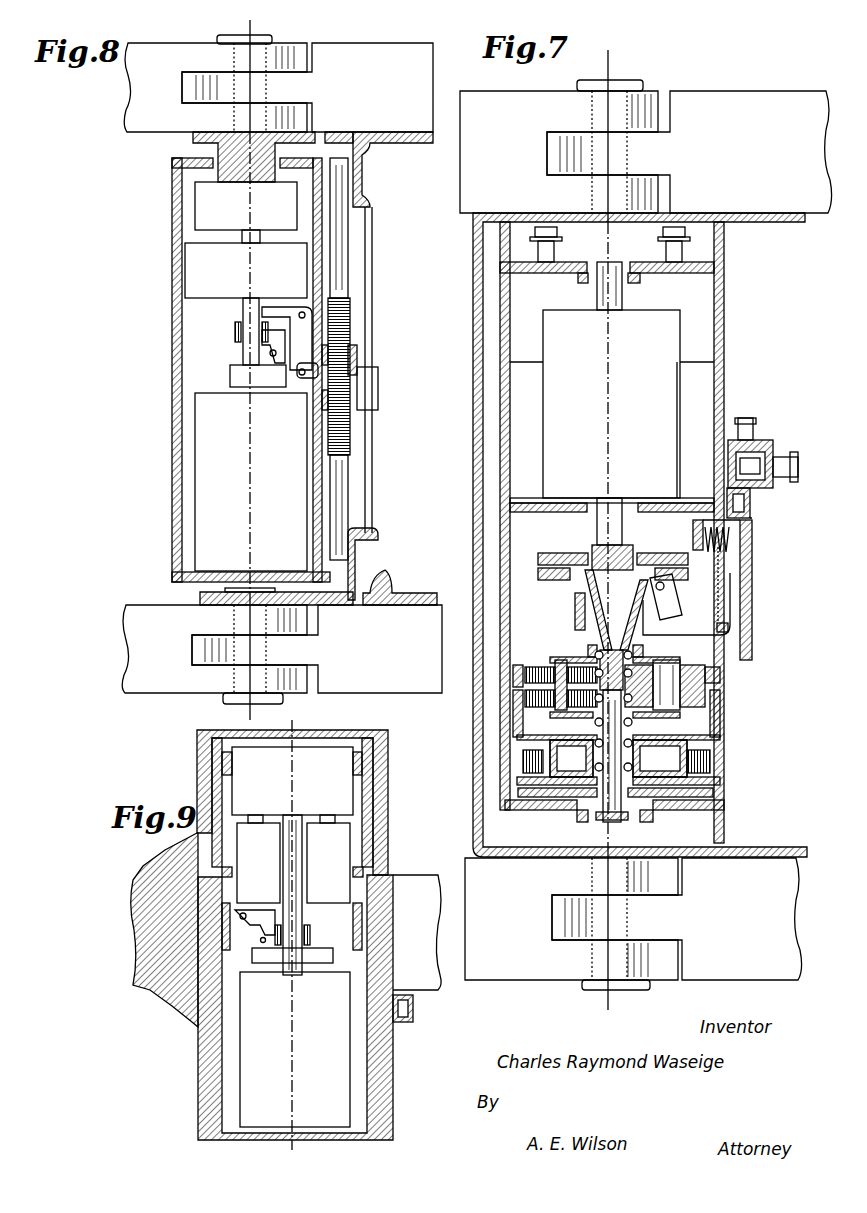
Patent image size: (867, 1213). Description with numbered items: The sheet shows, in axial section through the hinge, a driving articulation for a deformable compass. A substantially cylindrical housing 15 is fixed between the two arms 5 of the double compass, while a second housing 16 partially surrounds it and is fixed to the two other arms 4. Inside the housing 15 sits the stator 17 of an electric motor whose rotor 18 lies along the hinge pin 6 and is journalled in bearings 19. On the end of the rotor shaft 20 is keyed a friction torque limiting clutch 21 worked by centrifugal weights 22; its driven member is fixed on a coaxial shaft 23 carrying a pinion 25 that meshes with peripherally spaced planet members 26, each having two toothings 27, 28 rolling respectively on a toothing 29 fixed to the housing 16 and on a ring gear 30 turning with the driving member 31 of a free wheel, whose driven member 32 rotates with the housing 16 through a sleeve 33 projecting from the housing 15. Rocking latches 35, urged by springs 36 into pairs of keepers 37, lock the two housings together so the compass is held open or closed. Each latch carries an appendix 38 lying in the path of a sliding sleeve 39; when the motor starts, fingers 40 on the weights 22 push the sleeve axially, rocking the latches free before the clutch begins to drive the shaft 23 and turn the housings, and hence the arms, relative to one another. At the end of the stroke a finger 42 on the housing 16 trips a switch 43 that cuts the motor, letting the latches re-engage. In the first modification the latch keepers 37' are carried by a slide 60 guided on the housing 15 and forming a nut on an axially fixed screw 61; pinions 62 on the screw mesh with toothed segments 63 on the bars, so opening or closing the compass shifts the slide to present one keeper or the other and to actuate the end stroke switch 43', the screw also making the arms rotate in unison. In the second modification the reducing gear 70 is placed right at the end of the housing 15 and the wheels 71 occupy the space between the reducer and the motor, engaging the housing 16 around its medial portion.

In FIG. 7, the arms 4 is at (507, 97).
In FIG. 8, the arms 4 is at (390, 52).
In FIG. 7, the arms 5 is at (716, 100).
In FIG. 8, the arms 5 is at (134, 67).
In FIG. 7, the hinge pin 6 is at (620, 86).
In FIG. 7, the housing 15 is at (717, 344).
In FIG. 8, the housing 15 is at (180, 338).
In FIG. 9, the housing 15 is at (310, 736).
In FIG. 7, the housing 16 is at (480, 474).
In FIG. 9, the housing 16 is at (420, 888).
In FIG. 7, the stator 17 is at (523, 377).
In FIG. 7, the rotor 18 is at (653, 330).
In FIG. 7, the bearings 19 is at (586, 265).
In FIG. 7, the shaft 20 is at (606, 533).
In FIG. 7, the torque limiting clutch 21 is at (548, 582).
In FIG. 7, the centrifugal weights 22 is at (672, 600).
In FIG. 7, the shaft 23 is at (620, 815).
In FIG. 7, the pinion 25 is at (595, 675).
In FIG. 7, the planet members 26 is at (693, 685).
In FIG. 7, the toothing 27 is at (640, 663).
In FIG. 7, the toothing 28 is at (645, 716).
In FIG. 7, the toothing 29 is at (518, 666).
In FIG. 7, the ring gear 30 is at (527, 705).
In FIG. 7, the driving member 31 is at (655, 742).
In FIG. 7, the driven member 32 is at (714, 789).
In FIG. 7, the sleeve 33 is at (578, 832).
In FIG. 7, the rocking latches 35 is at (722, 607).
In FIG. 7, the springs 36 is at (704, 540).
In FIG. 7, the keepers 37 is at (743, 589).
In FIG. 7, the appendix 38 is at (680, 632).
In FIG. 7, the sliding sleeve 39 is at (577, 605).
In FIG. 7, the fingers 40 is at (645, 587).
In FIG. 7, the finger 42 is at (745, 491).
In FIG. 7, the switch 43 is at (771, 460).
In FIG. 8, the latch keepers 37' is at (367, 361).
In FIG. 8, the end stroke switch 43' is at (390, 388).
In FIG. 8, the slide 60 is at (346, 420).
In FIG. 8, the screw 61 is at (342, 480).
In FIG. 8, the pinions 62 is at (343, 140).
In FIG. 8, the toothed segments 63 is at (196, 138).
In FIG. 9, the reducing gear 70 is at (240, 782).
In FIG. 9, the wheels 71 is at (333, 846).